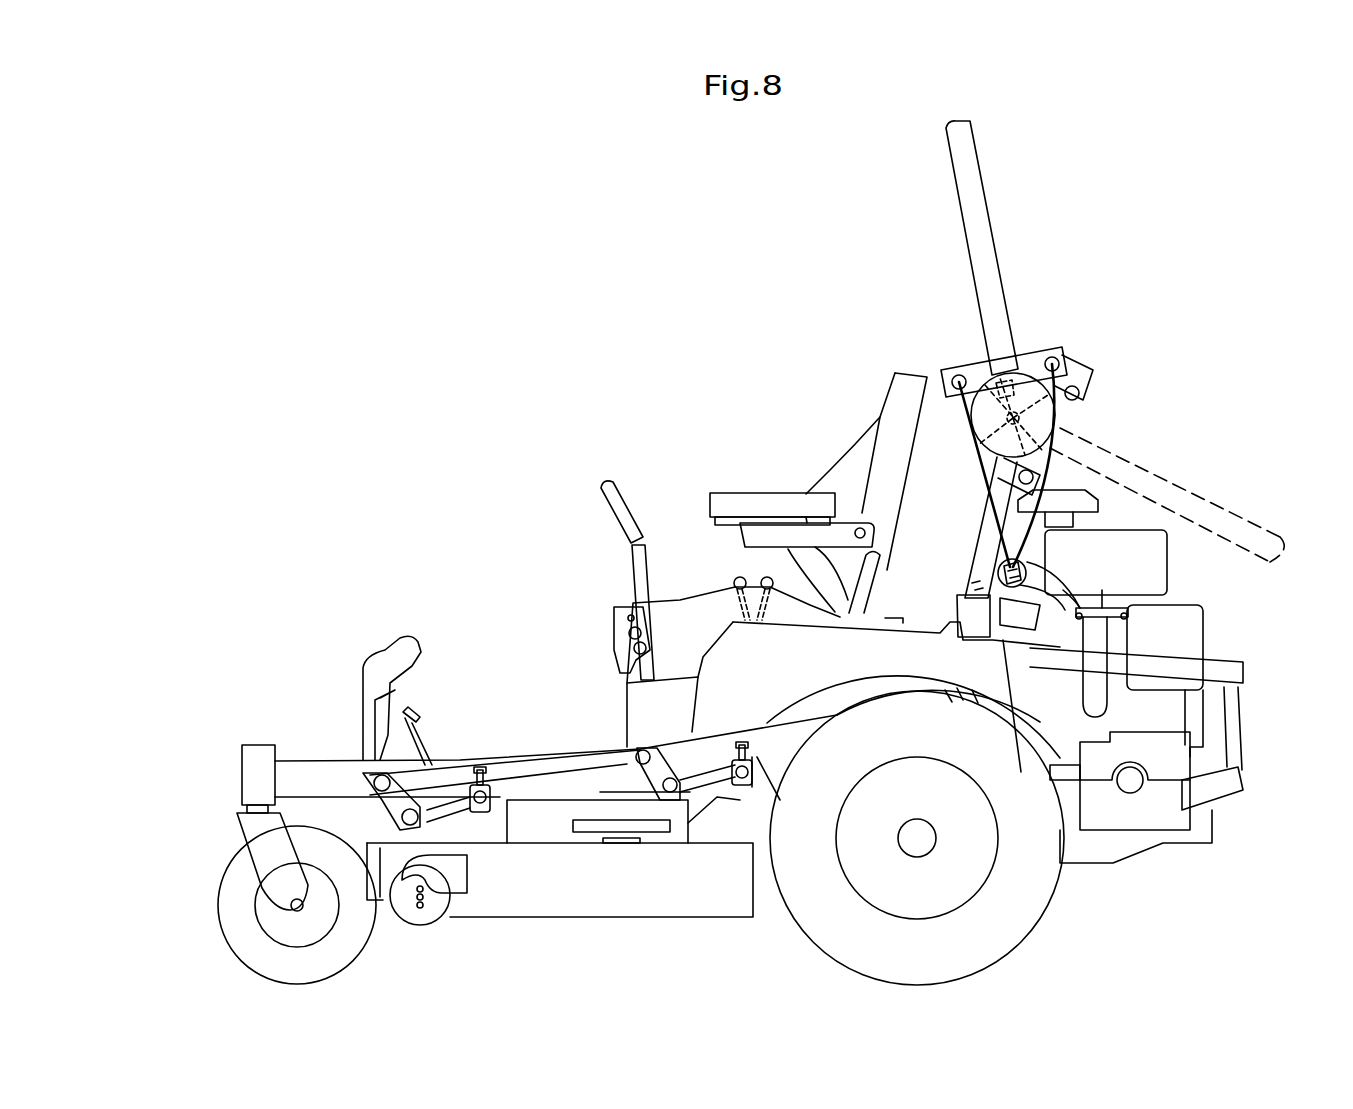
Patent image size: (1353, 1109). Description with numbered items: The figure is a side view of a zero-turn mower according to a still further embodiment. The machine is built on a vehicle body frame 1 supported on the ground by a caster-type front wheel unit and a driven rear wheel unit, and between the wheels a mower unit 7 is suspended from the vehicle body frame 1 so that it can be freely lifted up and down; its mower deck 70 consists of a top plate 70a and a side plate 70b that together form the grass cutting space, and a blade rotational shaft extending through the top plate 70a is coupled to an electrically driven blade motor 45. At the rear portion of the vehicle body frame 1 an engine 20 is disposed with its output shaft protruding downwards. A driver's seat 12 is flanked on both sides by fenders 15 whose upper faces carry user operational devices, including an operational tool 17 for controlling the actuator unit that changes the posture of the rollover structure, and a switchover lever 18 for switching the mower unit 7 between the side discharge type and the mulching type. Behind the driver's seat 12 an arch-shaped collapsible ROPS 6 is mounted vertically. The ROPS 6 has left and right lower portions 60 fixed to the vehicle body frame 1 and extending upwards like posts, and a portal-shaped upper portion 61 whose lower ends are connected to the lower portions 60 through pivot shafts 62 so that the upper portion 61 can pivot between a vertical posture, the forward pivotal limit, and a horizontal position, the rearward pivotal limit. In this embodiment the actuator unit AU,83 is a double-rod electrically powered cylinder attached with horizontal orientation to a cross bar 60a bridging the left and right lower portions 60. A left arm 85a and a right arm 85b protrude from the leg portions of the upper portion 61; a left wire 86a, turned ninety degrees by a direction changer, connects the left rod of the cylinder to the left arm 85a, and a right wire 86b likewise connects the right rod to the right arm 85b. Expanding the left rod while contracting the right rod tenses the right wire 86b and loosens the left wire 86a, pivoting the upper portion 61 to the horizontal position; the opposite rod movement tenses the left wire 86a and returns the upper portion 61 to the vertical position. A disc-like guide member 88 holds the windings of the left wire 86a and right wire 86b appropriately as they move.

The vehicle body frame 1 is at (320, 760).
The ROPS 6 is at (972, 241).
The mower unit 7 is at (622, 833).
The driver's seat 12 is at (857, 453).
The fender 15 is at (863, 652).
The operational tool 17 is at (738, 578).
The switchover lever 18 is at (772, 577).
The engine 20 is at (1205, 640).
The blade motor 45 is at (622, 793).
The lower portion 60 is at (983, 548).
The cross bar 60a is at (1022, 721).
The upper portion 61 is at (975, 252).
The pivot shaft 62 is at (1020, 418).
The mower deck 70 is at (560, 915).
The top plate 70a is at (632, 822).
The side plate 70b is at (577, 877).
The left arm 85a is at (966, 364).
The right arm 85b is at (1040, 350).
The left wire 86a is at (980, 457).
The right wire 86b is at (1040, 415).
The guide member 88 is at (1011, 395).
The actuator unit (electrically powered cylinder) AU,83 is at (1147, 577).